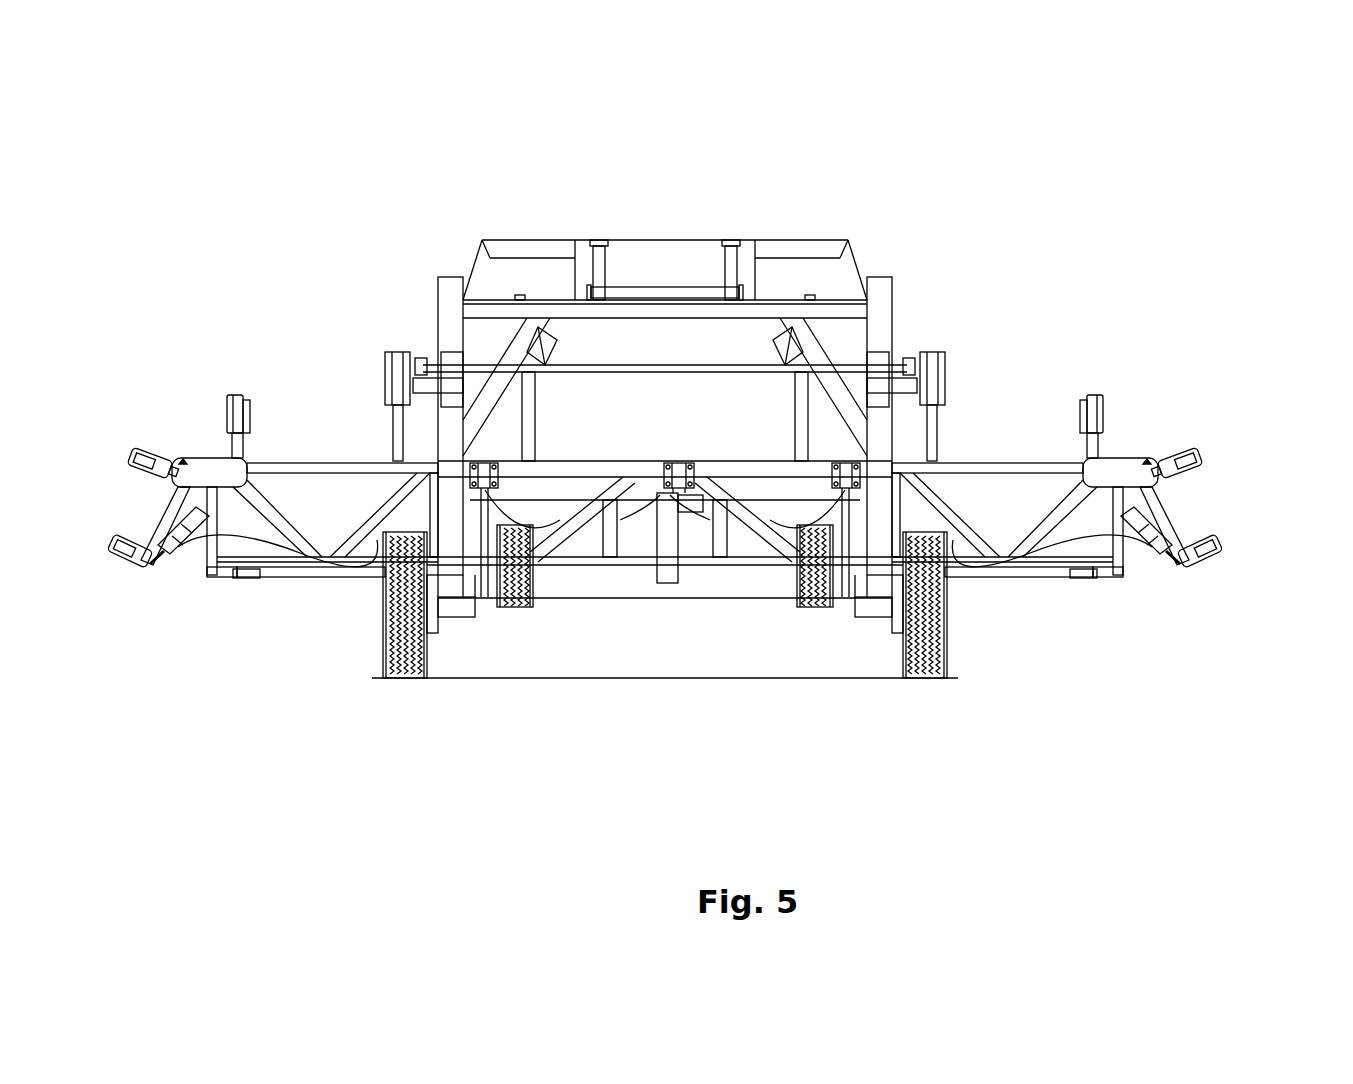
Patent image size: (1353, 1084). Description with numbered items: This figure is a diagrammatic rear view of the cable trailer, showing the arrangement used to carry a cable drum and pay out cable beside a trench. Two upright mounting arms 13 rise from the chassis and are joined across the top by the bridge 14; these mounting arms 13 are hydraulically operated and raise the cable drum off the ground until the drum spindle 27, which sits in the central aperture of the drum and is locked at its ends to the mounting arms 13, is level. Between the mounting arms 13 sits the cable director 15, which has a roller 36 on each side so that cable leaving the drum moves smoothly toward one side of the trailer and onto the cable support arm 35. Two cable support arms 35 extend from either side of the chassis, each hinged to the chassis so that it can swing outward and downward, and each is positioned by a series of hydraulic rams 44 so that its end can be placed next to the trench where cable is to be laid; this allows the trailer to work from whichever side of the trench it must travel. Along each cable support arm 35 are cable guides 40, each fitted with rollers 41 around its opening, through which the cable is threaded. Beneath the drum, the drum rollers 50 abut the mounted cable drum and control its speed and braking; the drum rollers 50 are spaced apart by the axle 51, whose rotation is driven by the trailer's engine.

The mounting arms 13 is at (450, 298).
The bridge 14 is at (815, 348).
The cable director 15 is at (683, 268).
The drum spindle 27 is at (657, 493).
The cable support arm 35 is at (340, 463).
The roller 36 is at (597, 250).
The cable guides 40 is at (150, 443).
The rollers 41 is at (245, 422).
The hydraulic rams 44 is at (312, 577).
The drum rollers 50 is at (513, 607).
The axle 51 is at (627, 598).